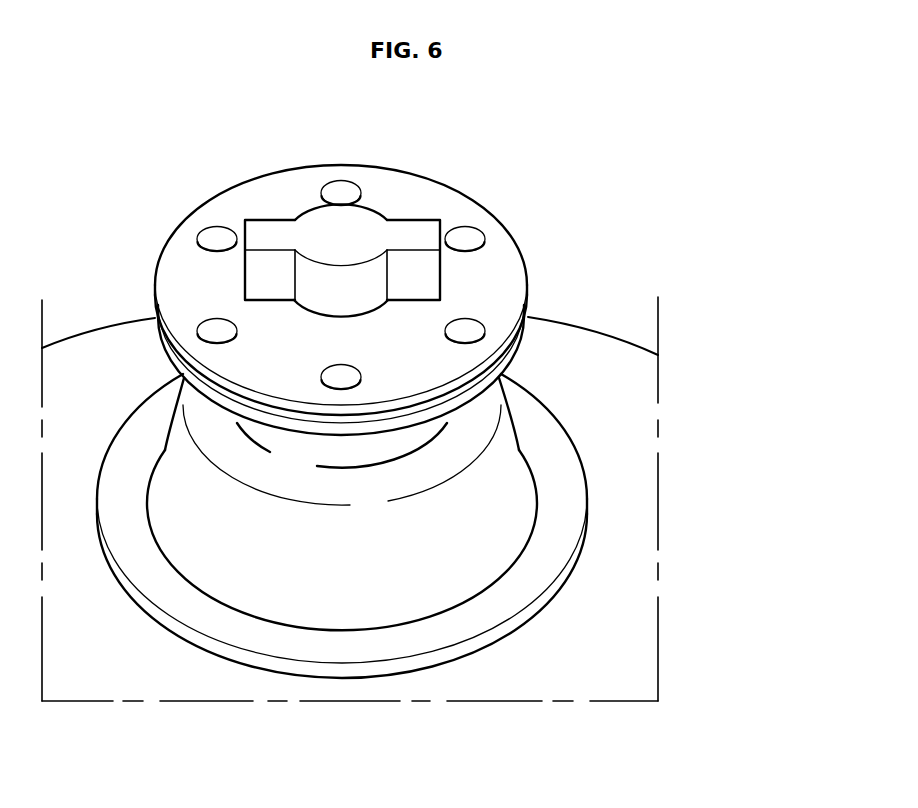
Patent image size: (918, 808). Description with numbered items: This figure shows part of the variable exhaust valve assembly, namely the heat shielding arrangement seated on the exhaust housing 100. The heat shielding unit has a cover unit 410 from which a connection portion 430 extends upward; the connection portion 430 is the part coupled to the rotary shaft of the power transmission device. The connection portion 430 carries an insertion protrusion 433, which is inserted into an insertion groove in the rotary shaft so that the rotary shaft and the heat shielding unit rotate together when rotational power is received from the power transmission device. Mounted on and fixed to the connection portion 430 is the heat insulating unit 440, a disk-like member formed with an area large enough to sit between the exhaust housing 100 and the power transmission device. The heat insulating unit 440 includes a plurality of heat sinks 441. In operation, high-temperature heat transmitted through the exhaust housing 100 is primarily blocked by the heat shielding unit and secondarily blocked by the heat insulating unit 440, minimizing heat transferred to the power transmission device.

The exhaust housing 100 is at (632, 495).
The cover unit 410 is at (503, 457).
The connection portion 430 is at (284, 317).
The insertion protrusion 433 is at (415, 234).
The heat insulating unit 440 is at (502, 268).
The heat sinks 441 is at (173, 370).